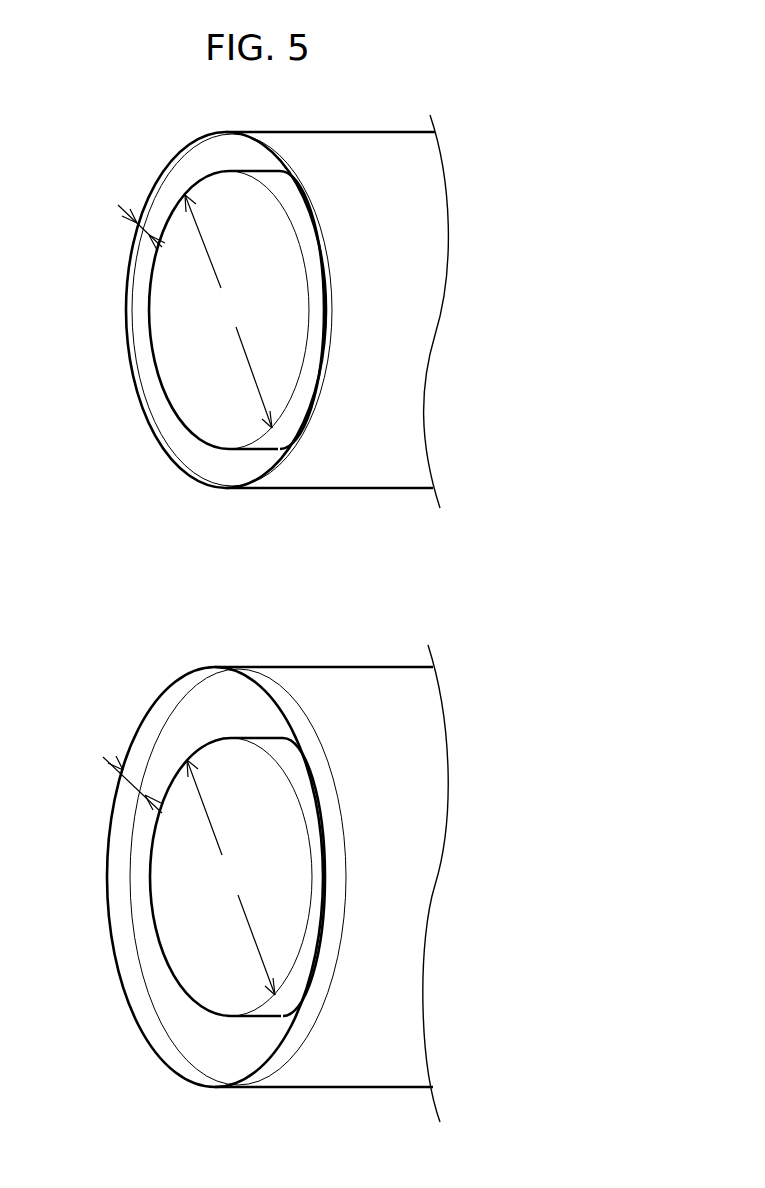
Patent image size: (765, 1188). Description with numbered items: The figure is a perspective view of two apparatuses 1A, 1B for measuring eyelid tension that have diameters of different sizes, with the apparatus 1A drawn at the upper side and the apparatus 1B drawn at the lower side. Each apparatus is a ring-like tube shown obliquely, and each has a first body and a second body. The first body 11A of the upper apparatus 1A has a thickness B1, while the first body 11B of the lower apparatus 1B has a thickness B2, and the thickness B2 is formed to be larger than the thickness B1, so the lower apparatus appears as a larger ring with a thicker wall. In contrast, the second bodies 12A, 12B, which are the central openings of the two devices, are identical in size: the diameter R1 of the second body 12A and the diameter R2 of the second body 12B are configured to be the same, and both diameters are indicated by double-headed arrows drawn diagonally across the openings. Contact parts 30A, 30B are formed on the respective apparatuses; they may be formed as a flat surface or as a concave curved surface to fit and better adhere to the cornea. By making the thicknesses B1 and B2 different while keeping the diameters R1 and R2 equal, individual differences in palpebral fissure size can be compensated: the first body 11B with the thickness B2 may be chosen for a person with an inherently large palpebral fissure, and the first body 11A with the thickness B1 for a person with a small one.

The apparatus for measuring eyelid tension 1A is at (173, 535).
The first body 11A is at (163, 173).
The second body 12A is at (272, 440).
The contact part 30A is at (170, 327).
The thickness B1 is at (135, 230).
The diameter R1 is at (228, 311).
The apparatus for measuring eyelid tension 1B is at (173, 1133).
The first body 11B is at (148, 735).
The second body 12B is at (275, 1012).
The contact part 30B is at (170, 922).
The thickness B2 is at (126, 792).
The diameter R2 is at (231, 877).